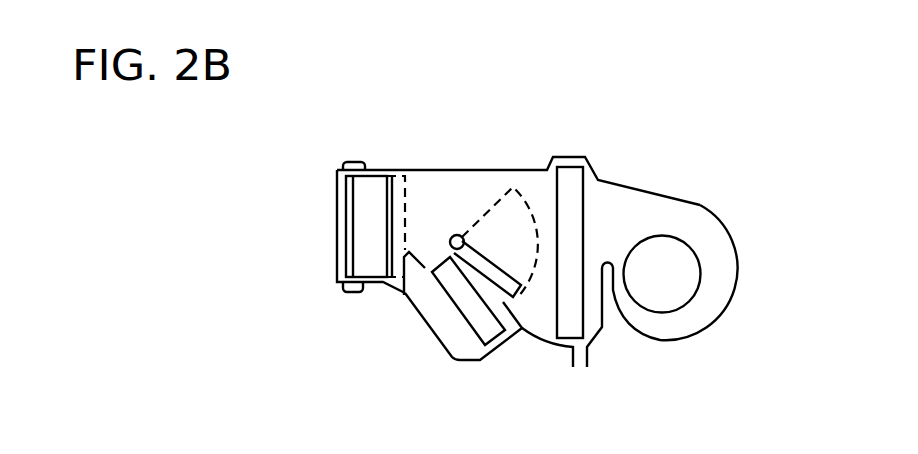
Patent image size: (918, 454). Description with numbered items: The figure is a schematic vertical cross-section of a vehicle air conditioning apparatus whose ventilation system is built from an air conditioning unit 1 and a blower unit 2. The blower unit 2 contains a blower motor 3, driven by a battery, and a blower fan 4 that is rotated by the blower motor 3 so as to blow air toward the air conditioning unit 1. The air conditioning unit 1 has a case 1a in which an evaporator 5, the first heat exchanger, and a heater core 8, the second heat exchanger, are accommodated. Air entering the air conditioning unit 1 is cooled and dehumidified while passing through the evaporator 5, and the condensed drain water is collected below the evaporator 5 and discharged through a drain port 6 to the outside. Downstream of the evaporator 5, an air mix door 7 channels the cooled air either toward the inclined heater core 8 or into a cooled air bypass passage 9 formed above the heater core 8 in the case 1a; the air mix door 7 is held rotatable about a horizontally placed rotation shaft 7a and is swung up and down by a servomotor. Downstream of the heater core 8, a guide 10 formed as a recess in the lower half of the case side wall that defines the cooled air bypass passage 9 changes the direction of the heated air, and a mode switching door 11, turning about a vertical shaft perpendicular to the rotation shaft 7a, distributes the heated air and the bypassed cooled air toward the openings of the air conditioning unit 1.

The air conditioning unit 1 is at (518, 165).
The case 1a is at (490, 362).
The blower unit 2 is at (650, 184).
The blower motor 3 is at (688, 273).
The blower fan 4 is at (706, 229).
The evaporator 5 is at (572, 178).
The drain port 6 is at (588, 354).
The air mix door 7 is at (528, 322).
The rotation shaft 7a is at (452, 236).
The heater core 8 is at (447, 267).
The cooled air bypass passage 9 is at (471, 206).
The guide 10 is at (418, 273).
The mode switching door 11 is at (373, 190).